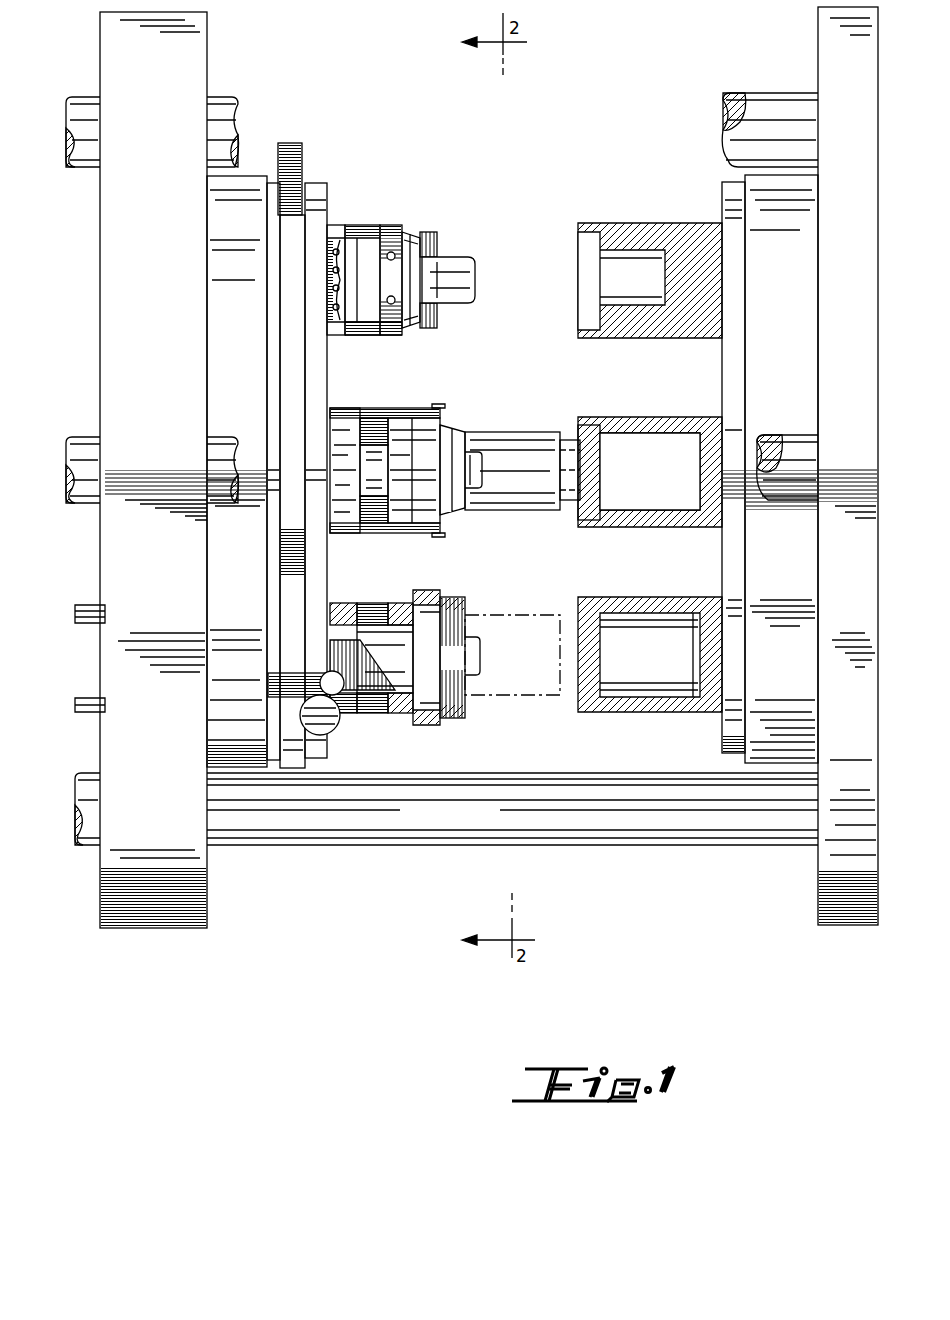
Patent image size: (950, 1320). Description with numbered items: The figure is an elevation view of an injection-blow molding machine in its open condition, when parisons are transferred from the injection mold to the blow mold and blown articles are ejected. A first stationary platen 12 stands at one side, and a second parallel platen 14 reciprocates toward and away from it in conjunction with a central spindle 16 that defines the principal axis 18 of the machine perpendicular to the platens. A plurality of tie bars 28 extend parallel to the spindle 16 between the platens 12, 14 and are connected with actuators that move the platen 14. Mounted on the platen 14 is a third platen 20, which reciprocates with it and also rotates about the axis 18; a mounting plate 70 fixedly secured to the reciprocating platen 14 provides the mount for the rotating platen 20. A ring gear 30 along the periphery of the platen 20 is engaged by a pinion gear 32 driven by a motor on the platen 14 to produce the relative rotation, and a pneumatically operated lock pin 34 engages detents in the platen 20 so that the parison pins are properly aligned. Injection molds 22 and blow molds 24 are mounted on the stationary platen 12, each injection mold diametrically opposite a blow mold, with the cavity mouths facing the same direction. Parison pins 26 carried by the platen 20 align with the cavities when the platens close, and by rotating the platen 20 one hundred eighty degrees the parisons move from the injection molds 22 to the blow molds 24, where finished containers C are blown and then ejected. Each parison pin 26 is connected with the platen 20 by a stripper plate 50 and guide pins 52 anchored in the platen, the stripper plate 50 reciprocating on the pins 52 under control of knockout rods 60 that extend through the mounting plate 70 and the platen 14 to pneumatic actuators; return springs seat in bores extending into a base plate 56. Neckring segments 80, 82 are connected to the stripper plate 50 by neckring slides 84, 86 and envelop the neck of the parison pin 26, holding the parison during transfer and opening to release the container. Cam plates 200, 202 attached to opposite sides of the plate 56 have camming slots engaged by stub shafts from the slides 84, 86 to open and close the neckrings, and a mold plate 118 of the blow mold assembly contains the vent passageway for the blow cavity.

The first stationary platen 12 is at (822, 30).
The second parallel platen 14 is at (193, 46).
The central spindle 16 is at (565, 460).
The principal axis 18 is at (562, 500).
The third platen 20 is at (318, 190).
The injection molds 22 is at (618, 228).
The blow molds 24 is at (680, 527).
The parison pins 26 is at (455, 265).
The tie bars 28 is at (214, 100).
The ring gear 30 is at (290, 322).
The pinion gear 32 is at (290, 150).
The lock pin 34 is at (330, 733).
The stripper plate 50 is at (362, 230).
The guide pins 52 is at (371, 422).
The base plate 56 is at (338, 230).
The knockout rods 60 is at (82, 702).
The mounting plate 70 is at (228, 207).
The neckring segment 80 is at (413, 328).
The neckring segment 82 is at (410, 246).
The neckring slide 84 is at (385, 338).
The neckring slide 86 is at (390, 225).
The mold plate 118 is at (735, 755).
The cam plate 200 is at (438, 407).
The cam plate 202 is at (437, 537).
The containers C is at (540, 510).